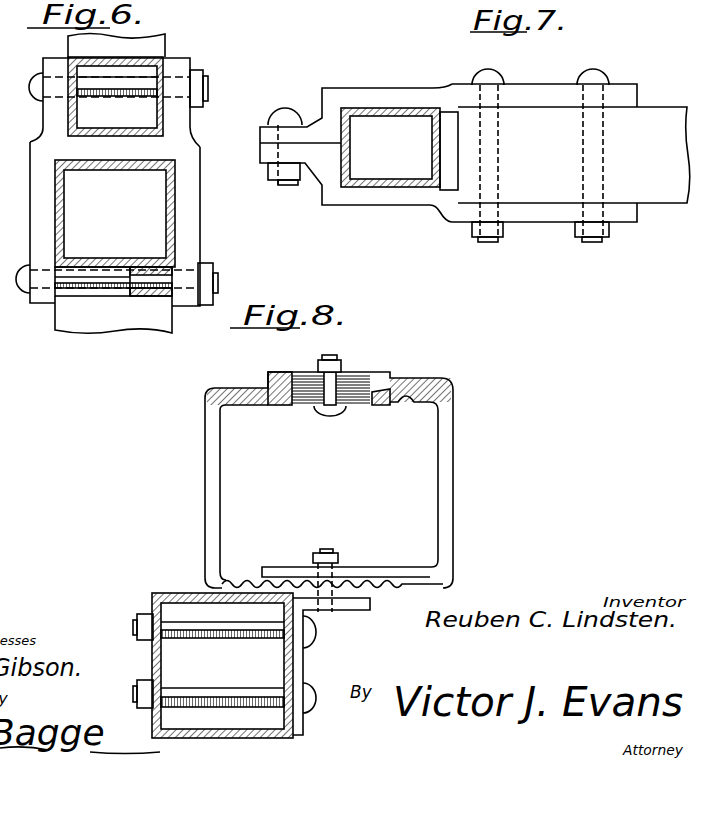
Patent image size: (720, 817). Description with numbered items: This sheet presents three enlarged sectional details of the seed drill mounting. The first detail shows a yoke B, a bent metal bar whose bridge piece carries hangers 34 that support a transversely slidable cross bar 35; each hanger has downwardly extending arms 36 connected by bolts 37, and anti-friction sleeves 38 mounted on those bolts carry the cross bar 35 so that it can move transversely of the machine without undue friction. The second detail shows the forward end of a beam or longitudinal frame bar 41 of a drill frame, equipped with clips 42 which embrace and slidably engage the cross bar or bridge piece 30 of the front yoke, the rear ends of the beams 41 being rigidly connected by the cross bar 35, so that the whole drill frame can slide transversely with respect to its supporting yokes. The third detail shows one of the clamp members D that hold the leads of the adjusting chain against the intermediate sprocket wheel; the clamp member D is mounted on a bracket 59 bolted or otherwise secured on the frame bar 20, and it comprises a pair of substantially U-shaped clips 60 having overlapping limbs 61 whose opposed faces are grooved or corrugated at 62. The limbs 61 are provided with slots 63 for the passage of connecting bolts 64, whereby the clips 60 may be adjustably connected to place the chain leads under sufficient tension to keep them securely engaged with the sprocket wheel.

In FIG. 6, the yoke B is at (152, 42).
In FIG. 6, the hanger 34 is at (192, 148).
In FIG. 6, the cross bar 35 is at (172, 203).
In FIG. 6, the downwardly extending arm 36 is at (188, 222).
In FIG. 6, the bolt 37 is at (216, 282).
In FIG. 6, the anti-friction sleeve 38 is at (148, 298).
In FIG. 7, the cross bar or bridge piece 30 is at (384, 113).
In FIG. 7, the beam or longitudinal frame bar 41 is at (655, 118).
In FIG. 7, the clip 42 is at (452, 85).
In FIG. 8, the frame bar 20 is at (162, 593).
In FIG. 8, the bracket 59 is at (354, 612).
In FIG. 8, the clip 60 is at (453, 419).
In FIG. 8, the overlapping limb 61 is at (398, 380).
In FIG. 8, the grooves or corrugations 62 is at (417, 404).
In FIG. 8, the slot 63 is at (356, 380).
In FIG. 8, the connecting bolt 64 is at (332, 414).
In FIG. 8, the clamp member D is at (448, 481).